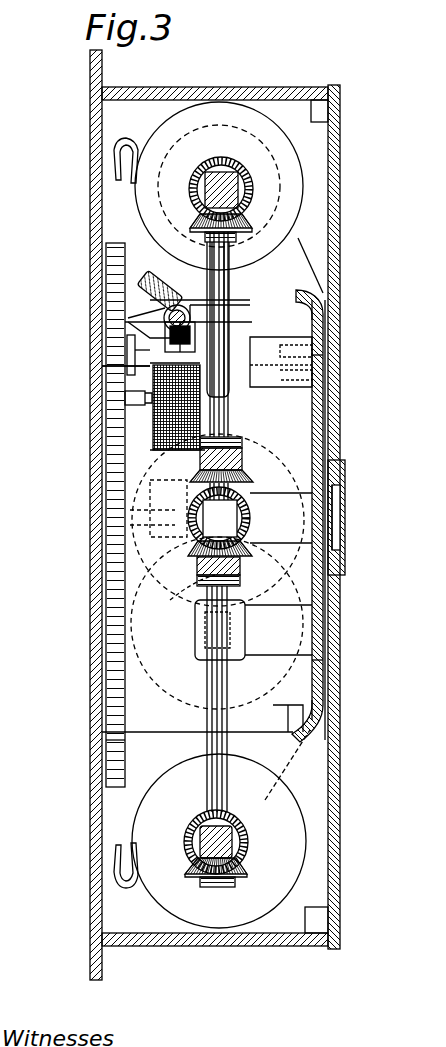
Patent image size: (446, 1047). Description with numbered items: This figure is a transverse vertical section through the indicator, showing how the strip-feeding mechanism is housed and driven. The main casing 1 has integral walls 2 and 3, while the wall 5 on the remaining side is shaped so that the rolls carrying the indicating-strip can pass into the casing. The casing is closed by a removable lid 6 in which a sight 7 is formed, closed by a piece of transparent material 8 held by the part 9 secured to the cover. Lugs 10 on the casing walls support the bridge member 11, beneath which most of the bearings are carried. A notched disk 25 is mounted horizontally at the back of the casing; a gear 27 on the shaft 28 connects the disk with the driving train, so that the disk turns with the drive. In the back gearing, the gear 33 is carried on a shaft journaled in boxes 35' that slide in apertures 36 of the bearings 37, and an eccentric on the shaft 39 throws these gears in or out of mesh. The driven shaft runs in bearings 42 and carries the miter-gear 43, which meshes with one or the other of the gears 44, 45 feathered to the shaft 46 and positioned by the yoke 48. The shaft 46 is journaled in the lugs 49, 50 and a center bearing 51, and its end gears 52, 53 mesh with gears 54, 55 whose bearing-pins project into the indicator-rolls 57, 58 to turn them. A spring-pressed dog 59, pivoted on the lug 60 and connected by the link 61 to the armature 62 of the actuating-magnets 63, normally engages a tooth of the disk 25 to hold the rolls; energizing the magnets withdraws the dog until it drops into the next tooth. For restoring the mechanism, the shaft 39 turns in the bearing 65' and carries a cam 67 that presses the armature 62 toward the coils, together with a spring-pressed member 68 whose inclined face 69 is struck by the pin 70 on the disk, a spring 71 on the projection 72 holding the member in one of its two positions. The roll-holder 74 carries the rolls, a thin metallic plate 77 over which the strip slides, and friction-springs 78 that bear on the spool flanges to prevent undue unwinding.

The main casing 1 is at (90, 78).
The casing wall 2 is at (252, 88).
The casing wall 3 is at (276, 947).
The casing wall 5 is at (132, 712).
The lid 6 is at (340, 215).
The sight 7 is at (336, 540).
The transparent material 8 is at (340, 513).
The retaining part 9 is at (345, 485).
The lugs 10 is at (324, 292).
The bridge member 11 is at (323, 662).
The notched disk 25 is at (115, 750).
The gear 27 is at (183, 592).
The shaft 28 is at (132, 548).
The gear 33 is at (217, 623).
The boxes 35' is at (244, 630).
The apertures 36 is at (244, 658).
The bearings 37 is at (278, 630).
The shaft 39 is at (145, 312).
The bearings 42 is at (281, 518).
The miter-gear 43 is at (258, 542).
The gear 44 is at (242, 576).
The gear 45 is at (246, 478).
The shaft 46 is at (230, 775).
The yoke 48 is at (232, 447).
The lug 49 is at (240, 178).
The lug 50 is at (246, 826).
The bearing 51 is at (219, 518).
The gear 52 is at (246, 866).
The gear 53 is at (256, 212).
The gear 54 is at (196, 822).
The gear 55 is at (202, 178).
The indicator-roll 57 is at (223, 888).
The indicator-roll 58 is at (294, 165).
The spring-pressed dog 59 is at (125, 398).
The lug 60 is at (145, 368).
The link 61 is at (127, 351).
The armature 62 is at (190, 340).
The actuating-magnets 63 is at (158, 424).
The bearing 65' is at (298, 490).
The cam 67 is at (164, 318).
The spring-pressed member 68 is at (205, 316).
The angularly-inclined face 69 is at (140, 290).
The pin 70 is at (135, 402).
The spring 71 is at (252, 378).
The projection 72 is at (252, 350).
The roll-holder 74 is at (306, 870).
The thin metallic plate 77 is at (325, 358).
The friction-springs 78 is at (138, 131).